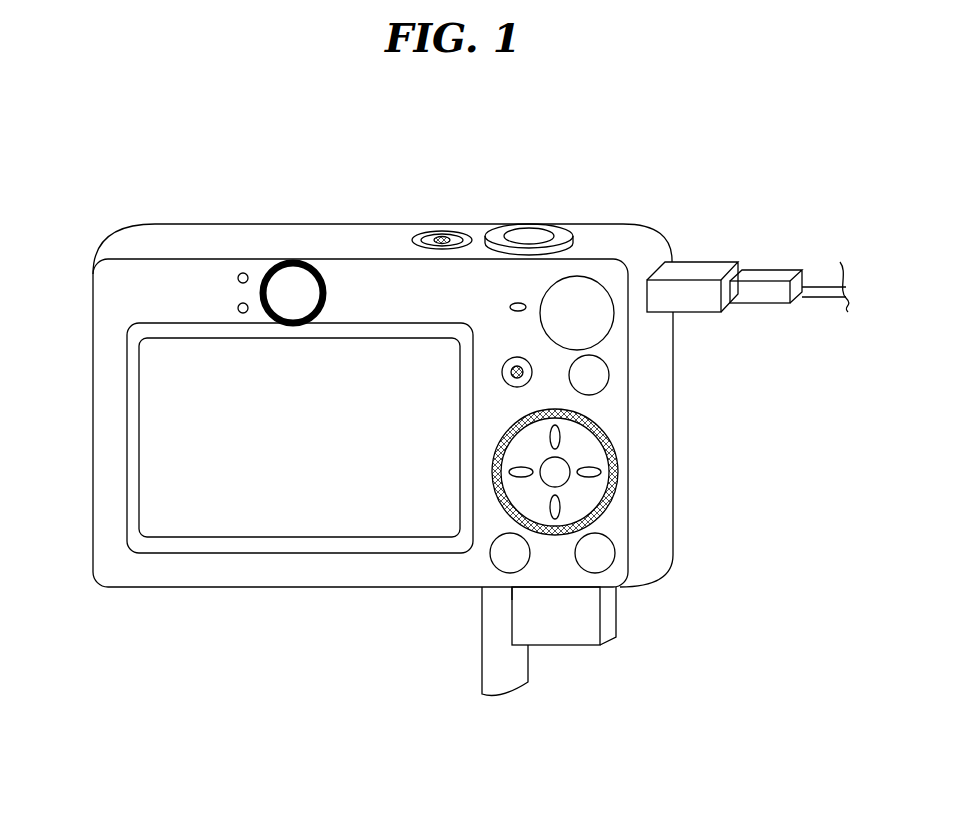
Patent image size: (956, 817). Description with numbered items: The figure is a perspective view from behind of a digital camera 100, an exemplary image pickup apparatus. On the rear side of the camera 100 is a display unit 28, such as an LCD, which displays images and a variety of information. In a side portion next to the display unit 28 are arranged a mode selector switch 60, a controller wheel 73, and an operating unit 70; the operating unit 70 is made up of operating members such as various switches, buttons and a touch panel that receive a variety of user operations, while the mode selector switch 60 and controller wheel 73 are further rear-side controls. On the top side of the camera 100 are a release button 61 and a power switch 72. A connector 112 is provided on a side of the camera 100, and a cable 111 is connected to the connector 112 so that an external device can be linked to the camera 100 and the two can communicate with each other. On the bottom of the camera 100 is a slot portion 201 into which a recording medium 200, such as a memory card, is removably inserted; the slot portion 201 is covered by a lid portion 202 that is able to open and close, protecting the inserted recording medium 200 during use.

The digital camera 100 is at (182, 612).
The display unit 28 is at (205, 357).
The power switch 72 is at (442, 237).
The release button 61 is at (535, 231).
The mode selector switch 60 is at (590, 292).
The controller wheel 73 is at (492, 450).
The operating unit 70 is at (537, 252).
The connector 112 is at (692, 268).
The cable 111 is at (767, 275).
The recording medium 200 is at (567, 630).
The slot portion 201 is at (532, 588).
The lid portion 202 is at (532, 682).